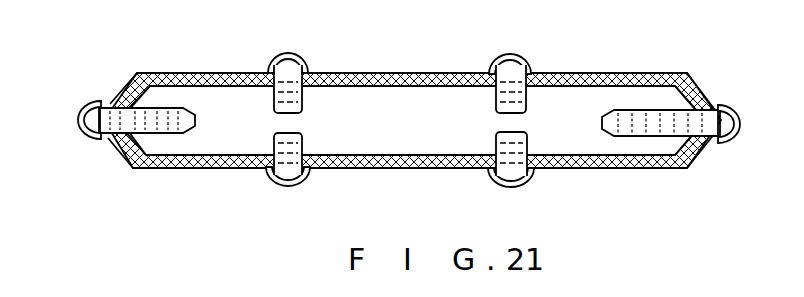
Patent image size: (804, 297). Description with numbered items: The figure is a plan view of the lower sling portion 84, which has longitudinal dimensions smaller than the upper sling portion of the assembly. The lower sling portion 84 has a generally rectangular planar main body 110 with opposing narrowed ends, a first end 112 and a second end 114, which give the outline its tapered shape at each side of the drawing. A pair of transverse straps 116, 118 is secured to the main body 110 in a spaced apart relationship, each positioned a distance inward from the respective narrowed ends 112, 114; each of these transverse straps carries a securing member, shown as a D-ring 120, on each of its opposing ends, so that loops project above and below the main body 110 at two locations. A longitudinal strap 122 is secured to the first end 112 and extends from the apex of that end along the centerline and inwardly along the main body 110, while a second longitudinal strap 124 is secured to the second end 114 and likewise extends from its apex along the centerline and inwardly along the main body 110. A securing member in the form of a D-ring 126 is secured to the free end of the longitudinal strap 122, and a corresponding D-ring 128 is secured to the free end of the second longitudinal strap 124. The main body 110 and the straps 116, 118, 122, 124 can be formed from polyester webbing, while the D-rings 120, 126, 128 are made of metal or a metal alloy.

The lower sling portion 84 is at (390, 74).
The main body 110 is at (356, 148).
The first end 112 is at (120, 82).
The second end 114 is at (712, 104).
The transverse strap 116 is at (262, 165).
The transverse strap 118 is at (478, 166).
The D-ring 120 is at (292, 56).
The longitudinal strap 122 is at (143, 128).
The second longitudinal strap 124 is at (670, 133).
The D-ring 126 is at (81, 103).
The D-ring 128 is at (735, 107).